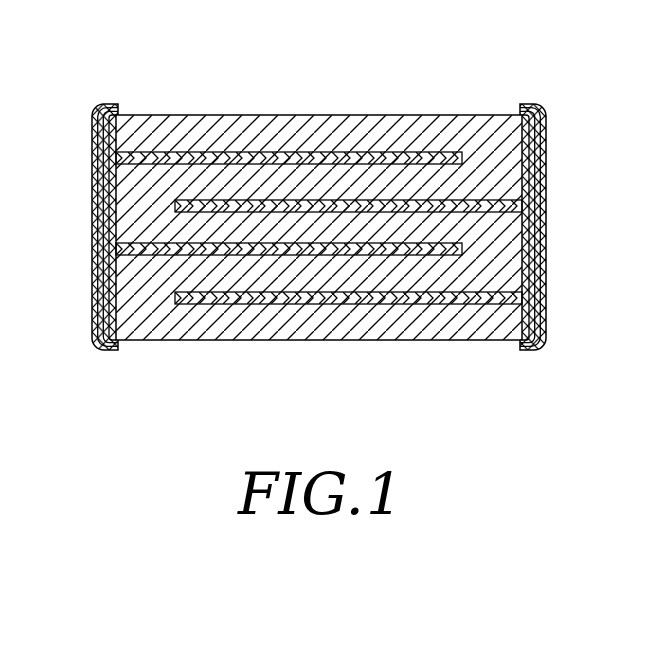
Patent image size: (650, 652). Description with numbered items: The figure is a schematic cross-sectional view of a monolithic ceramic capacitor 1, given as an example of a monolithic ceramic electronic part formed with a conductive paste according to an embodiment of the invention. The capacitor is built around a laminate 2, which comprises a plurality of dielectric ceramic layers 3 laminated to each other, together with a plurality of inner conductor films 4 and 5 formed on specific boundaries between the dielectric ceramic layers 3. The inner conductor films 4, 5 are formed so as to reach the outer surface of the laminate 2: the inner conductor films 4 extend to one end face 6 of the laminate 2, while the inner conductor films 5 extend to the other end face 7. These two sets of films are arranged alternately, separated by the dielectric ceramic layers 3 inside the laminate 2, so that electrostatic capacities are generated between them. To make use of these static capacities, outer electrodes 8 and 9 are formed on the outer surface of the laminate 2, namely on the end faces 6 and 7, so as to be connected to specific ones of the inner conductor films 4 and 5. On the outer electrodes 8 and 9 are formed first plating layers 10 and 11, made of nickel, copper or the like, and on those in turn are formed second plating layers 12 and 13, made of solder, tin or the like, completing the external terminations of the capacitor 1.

The monolithic ceramic capacitor 1 is at (150, 23).
The laminate 2 is at (319, 188).
The dielectric ceramic layers 3 is at (327, 183).
The inner conductor films 4 is at (161, 156).
The inner conductor films 5 is at (480, 200).
The end face 6 is at (70, 227).
The end face 7 is at (563, 227).
The outer electrode 8 is at (116, 155).
The outer electrode 9 is at (528, 153).
The first plating layer 10 is at (104, 191).
The first plating layer 11 is at (535, 213).
The second plating layer 12 is at (98, 283).
The second plating layer 13 is at (540, 305).